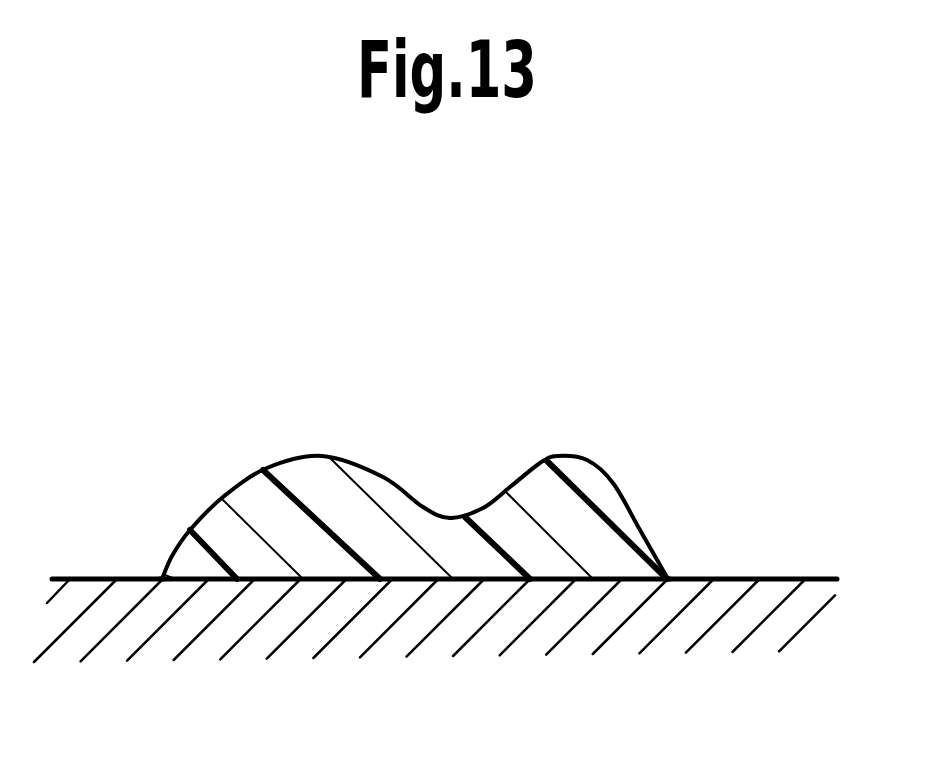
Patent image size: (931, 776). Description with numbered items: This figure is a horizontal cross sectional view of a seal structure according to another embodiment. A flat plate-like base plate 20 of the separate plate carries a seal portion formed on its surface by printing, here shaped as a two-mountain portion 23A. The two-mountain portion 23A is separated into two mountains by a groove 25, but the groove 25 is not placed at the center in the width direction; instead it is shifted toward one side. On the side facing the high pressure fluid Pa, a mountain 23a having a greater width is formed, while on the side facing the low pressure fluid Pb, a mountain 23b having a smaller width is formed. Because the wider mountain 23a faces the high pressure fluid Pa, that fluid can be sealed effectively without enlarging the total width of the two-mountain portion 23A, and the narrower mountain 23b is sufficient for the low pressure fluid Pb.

The base plate 20 is at (813, 587).
The two-mountain portion 23A is at (466, 430).
The mountain 23a is at (288, 473).
The mountain 23b is at (628, 475).
The groove 25 is at (465, 497).
The high pressure fluid Pa is at (113, 556).
The low pressure fluid Pb is at (760, 555).